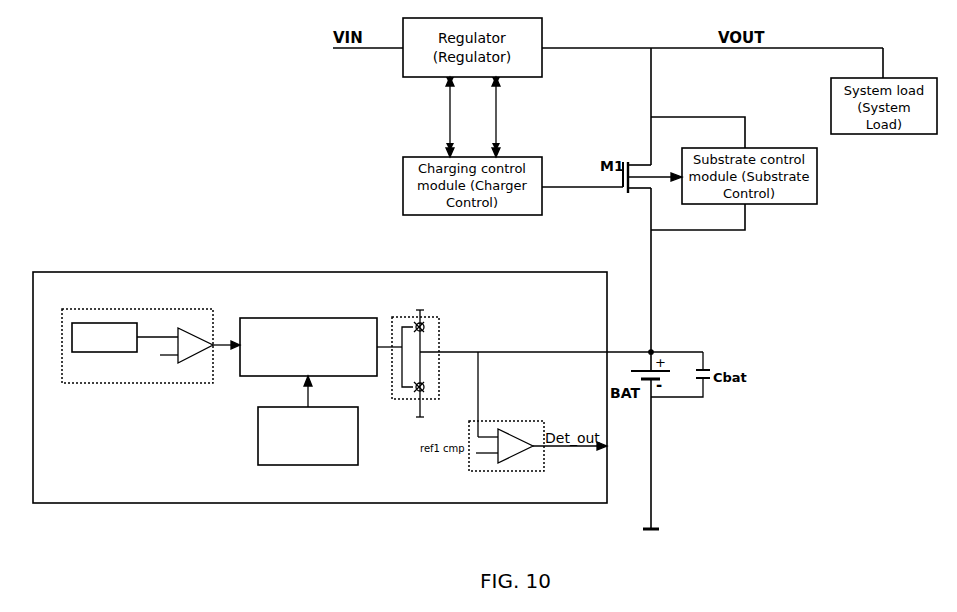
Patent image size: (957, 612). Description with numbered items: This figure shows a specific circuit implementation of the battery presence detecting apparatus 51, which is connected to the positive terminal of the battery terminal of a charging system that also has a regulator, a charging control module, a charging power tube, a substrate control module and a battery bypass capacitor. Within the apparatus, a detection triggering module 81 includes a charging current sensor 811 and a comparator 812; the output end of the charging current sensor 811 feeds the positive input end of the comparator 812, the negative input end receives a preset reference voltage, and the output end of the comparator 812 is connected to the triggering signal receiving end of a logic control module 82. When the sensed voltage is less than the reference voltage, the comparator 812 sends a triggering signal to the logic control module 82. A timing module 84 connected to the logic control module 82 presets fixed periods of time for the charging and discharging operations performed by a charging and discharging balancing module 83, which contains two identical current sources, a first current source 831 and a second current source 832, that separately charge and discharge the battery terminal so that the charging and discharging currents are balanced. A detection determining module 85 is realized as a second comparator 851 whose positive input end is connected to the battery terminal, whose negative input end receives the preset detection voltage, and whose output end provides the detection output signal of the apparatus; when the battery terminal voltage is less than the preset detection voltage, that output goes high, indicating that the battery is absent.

The battery presence detecting apparatus 51 is at (331, 272).
The detection triggering module 81 is at (150, 352).
The charging current sensor 811 is at (112, 323).
The comparator 812 is at (192, 336).
The logic control module 82 is at (310, 318).
The charging and discharging balancing module 83 is at (428, 375).
The first current source 831 is at (423, 326).
The second current source 832 is at (425, 389).
The timing module 84 is at (258, 435).
The detection determining module 85 is at (513, 453).
The second comparator 851 is at (509, 428).